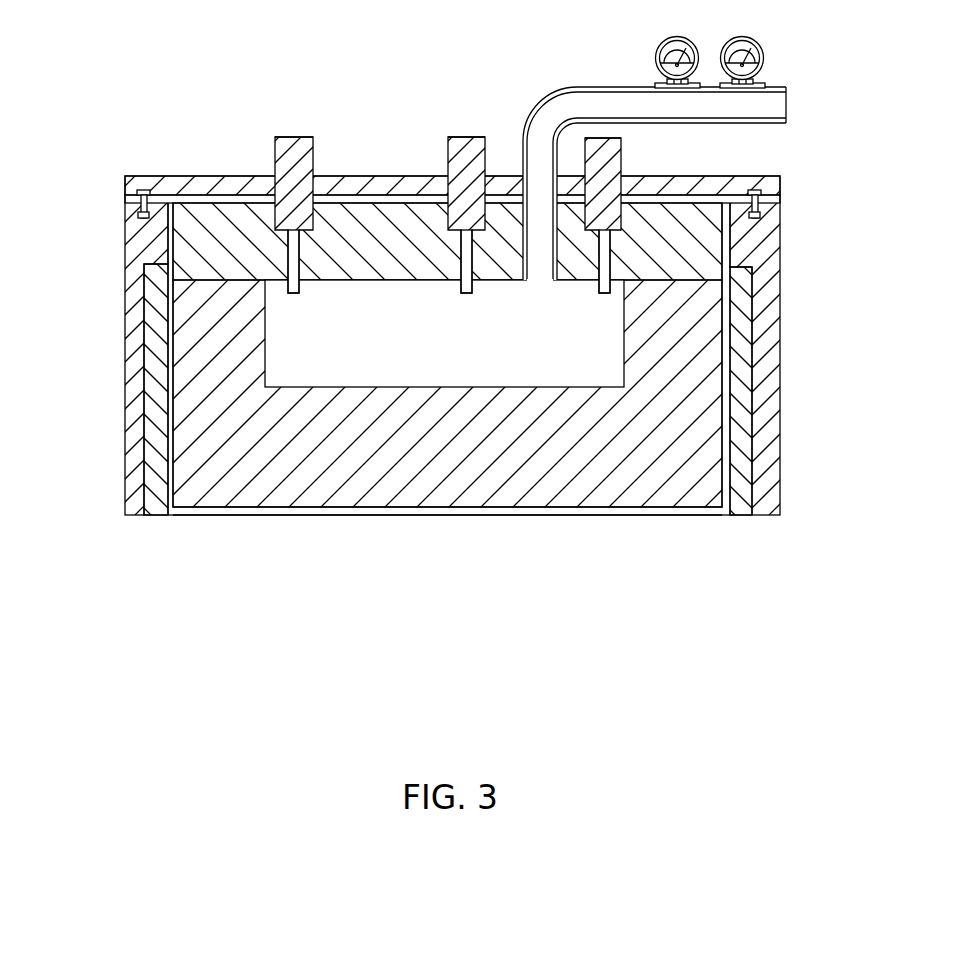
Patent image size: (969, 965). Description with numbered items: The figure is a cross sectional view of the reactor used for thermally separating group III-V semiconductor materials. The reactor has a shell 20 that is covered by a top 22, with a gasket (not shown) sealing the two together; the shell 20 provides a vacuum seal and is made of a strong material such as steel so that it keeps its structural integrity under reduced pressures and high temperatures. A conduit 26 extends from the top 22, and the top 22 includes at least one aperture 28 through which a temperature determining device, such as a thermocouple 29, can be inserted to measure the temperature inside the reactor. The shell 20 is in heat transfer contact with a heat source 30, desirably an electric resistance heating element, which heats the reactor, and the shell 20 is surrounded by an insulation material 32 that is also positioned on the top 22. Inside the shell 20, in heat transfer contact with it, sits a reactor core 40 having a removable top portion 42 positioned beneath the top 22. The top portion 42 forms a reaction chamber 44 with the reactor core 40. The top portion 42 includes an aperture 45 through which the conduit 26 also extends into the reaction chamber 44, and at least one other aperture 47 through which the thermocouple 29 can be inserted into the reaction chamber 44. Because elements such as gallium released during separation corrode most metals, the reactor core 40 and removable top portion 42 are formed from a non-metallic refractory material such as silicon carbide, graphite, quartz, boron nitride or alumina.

The shell 20 is at (728, 432).
The top 22 is at (127, 199).
The conduit 26 is at (543, 98).
The aperture 28 is at (275, 162).
The thermocouple 29 is at (291, 137).
The heat source 30 is at (153, 425).
The insulation material 32 is at (131, 341).
The reactor core 40 is at (245, 507).
The removable top portion 42 is at (167, 236).
The reaction chamber 44 is at (385, 355).
The aperture 45 is at (556, 282).
The aperture 47 is at (300, 290).